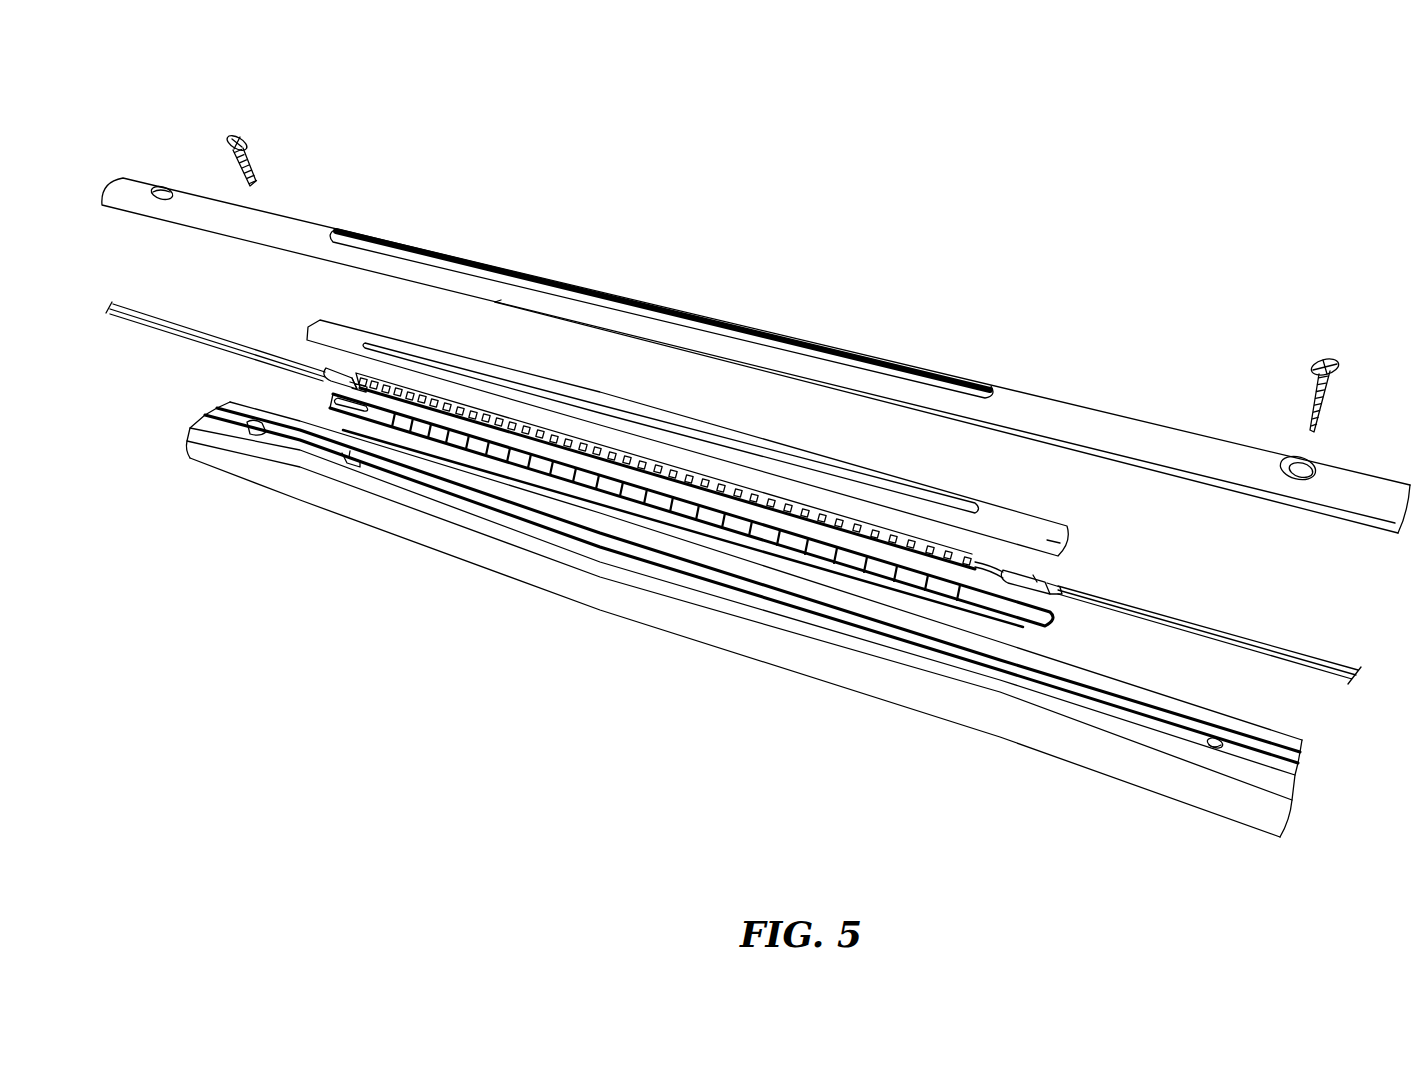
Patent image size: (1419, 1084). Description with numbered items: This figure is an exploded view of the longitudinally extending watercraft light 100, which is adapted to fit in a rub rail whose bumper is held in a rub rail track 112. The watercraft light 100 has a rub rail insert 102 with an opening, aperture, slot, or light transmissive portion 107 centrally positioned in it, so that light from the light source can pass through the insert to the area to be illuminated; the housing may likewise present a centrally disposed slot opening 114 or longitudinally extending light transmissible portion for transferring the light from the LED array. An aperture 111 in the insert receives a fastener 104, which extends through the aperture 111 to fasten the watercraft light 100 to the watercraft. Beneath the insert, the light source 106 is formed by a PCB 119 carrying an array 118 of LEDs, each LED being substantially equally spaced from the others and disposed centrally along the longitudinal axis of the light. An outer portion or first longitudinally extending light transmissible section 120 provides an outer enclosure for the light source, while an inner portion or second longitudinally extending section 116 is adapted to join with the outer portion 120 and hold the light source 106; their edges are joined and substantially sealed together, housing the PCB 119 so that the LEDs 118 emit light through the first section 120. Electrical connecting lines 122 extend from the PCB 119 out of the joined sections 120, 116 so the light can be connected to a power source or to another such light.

The longitudinally extending watercraft light 100 is at (947, 308).
The rub rail insert 102 is at (270, 222).
The fastener 104 is at (240, 137).
The light 106 is at (937, 540).
The light transmissive portion 107 is at (417, 243).
The aperture 111 is at (1313, 462).
The rub rail track 112 is at (975, 712).
The centrally disposed slot opening 114 is at (738, 580).
The inner portion 116 is at (327, 410).
The array of LEDs 118 is at (420, 403).
The PCB 119 is at (520, 440).
The outer portion 120 is at (680, 422).
The electrical connecting lines 122 is at (162, 318).